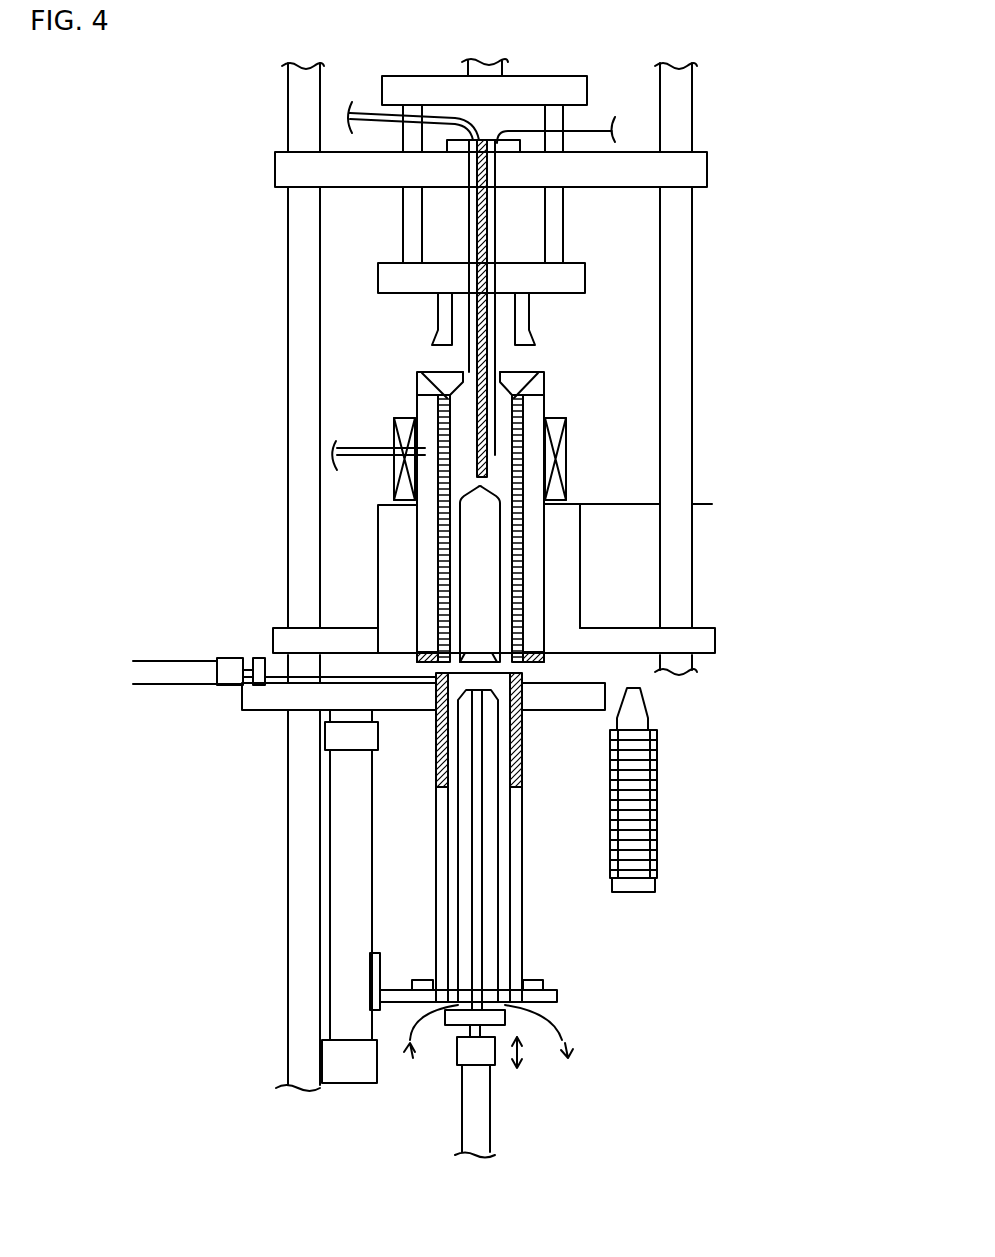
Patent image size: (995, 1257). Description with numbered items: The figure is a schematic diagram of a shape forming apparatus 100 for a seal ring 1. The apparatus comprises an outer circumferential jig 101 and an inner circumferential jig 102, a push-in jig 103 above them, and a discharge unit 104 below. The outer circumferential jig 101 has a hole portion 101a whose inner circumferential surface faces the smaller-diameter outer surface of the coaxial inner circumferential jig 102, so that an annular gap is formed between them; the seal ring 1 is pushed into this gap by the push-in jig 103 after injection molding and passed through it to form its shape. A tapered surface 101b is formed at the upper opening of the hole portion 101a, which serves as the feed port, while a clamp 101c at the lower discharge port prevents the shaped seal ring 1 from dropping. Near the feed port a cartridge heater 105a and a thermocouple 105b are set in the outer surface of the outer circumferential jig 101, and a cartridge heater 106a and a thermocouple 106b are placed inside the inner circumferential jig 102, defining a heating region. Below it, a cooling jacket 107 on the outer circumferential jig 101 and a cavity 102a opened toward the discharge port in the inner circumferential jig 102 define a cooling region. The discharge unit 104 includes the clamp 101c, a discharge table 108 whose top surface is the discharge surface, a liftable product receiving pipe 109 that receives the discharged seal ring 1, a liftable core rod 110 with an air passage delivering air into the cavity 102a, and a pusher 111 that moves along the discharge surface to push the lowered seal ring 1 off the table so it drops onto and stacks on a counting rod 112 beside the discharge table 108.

The shape forming apparatus 100 is at (197, 225).
The seal ring 1 is at (688, 772).
The outer circumferential jig 101 is at (538, 410).
The hole portion 101a is at (525, 441).
The tapered surface 101b is at (525, 366).
The clamp 101c is at (417, 656).
The inner circumferential jig 102 is at (634, 574).
The cavity 102a is at (489, 607).
The push-in jig 103 is at (529, 338).
The discharge unit 104 is at (532, 633).
The cartridge heater 105a is at (394, 433).
The thermocouple 105b is at (385, 457).
The cartridge heater 106a is at (478, 204).
The thermocouple 106b is at (497, 210).
The cooling jacket 107 is at (581, 568).
The discharge table 108 is at (568, 673).
The product receiving pipe 109 is at (436, 773).
The core rod 110 is at (512, 803).
The pusher 111 is at (280, 681).
The counting rod 112 is at (638, 888).